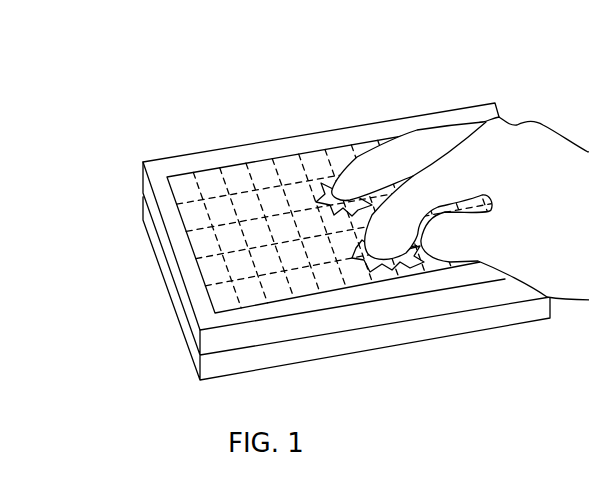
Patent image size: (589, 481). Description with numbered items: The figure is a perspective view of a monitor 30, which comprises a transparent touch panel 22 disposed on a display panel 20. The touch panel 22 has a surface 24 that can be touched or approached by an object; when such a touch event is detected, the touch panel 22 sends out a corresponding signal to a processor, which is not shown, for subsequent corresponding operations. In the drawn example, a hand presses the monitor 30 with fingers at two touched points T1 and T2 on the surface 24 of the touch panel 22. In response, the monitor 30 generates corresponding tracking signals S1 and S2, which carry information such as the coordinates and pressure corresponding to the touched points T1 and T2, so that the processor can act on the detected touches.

The display panel 20 is at (200, 368).
The touch panel 22 is at (160, 162).
The surface 24 is at (258, 165).
The monitor 30 is at (278, 104).
The touched point T1 is at (330, 185).
The touched point T2 is at (368, 263).
The tracking signal S1 is at (132, 233).
The tracking signal S2 is at (155, 297).